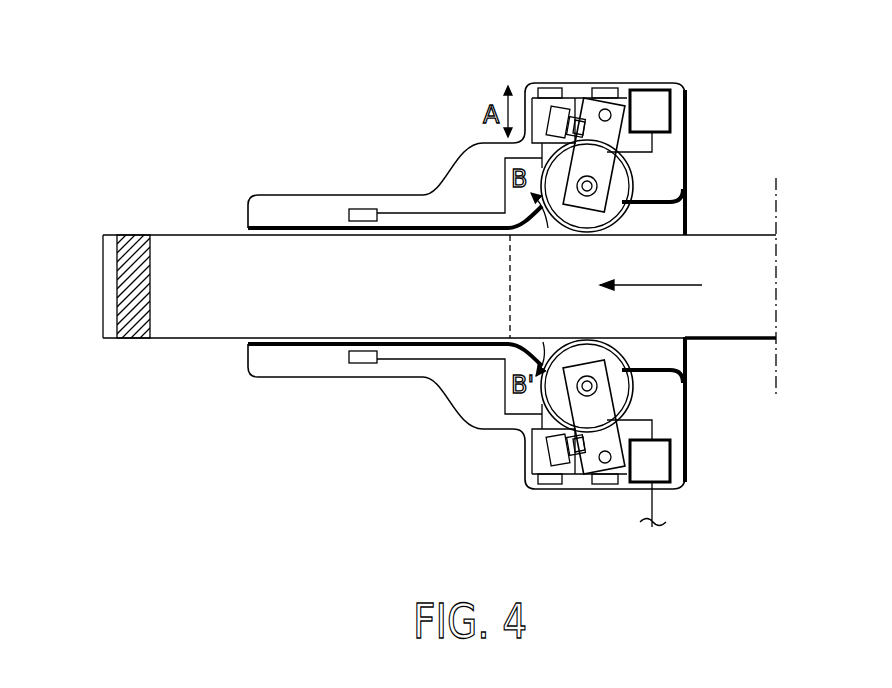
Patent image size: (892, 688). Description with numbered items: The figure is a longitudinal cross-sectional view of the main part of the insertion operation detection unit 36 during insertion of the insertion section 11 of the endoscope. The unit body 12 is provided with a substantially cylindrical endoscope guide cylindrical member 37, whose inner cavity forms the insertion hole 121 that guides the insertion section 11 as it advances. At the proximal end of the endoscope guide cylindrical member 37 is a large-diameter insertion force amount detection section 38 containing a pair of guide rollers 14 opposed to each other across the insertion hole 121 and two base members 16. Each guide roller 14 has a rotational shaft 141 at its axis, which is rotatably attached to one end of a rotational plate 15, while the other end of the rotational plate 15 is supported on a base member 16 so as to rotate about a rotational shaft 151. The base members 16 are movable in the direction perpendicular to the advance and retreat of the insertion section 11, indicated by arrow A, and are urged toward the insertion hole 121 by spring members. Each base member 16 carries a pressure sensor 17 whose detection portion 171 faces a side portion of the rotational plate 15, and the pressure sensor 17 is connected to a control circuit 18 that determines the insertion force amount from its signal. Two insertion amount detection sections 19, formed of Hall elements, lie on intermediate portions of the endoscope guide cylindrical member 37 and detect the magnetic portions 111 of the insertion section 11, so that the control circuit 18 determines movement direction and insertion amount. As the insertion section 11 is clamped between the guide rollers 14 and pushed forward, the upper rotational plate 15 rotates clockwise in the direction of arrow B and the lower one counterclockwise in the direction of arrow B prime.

The insertion operation detection unit 36 is at (363, 98).
The insertion section 11 is at (205, 338).
The magnetic portions 111 is at (135, 338).
The unit body 12 is at (465, 151).
The insertion hole 121 is at (296, 245).
The insertion amount detection sections 19 is at (362, 208).
The endoscope guide cylindrical member 37 is at (272, 380).
The insertion force amount detection section 38 is at (683, 84).
The base members 16 is at (540, 105).
The pressure sensor 17 is at (557, 108).
The detection portion 171 is at (576, 117).
The rotational plate 15 is at (607, 150).
The rotational shaft 151 is at (608, 112).
The guide rollers 14 is at (598, 178).
The rotational shaft 141 is at (598, 190).
The control circuit 18 is at (645, 112).